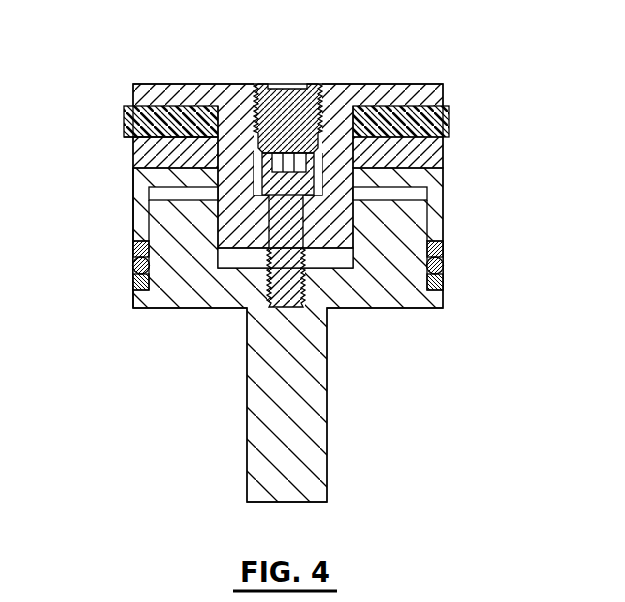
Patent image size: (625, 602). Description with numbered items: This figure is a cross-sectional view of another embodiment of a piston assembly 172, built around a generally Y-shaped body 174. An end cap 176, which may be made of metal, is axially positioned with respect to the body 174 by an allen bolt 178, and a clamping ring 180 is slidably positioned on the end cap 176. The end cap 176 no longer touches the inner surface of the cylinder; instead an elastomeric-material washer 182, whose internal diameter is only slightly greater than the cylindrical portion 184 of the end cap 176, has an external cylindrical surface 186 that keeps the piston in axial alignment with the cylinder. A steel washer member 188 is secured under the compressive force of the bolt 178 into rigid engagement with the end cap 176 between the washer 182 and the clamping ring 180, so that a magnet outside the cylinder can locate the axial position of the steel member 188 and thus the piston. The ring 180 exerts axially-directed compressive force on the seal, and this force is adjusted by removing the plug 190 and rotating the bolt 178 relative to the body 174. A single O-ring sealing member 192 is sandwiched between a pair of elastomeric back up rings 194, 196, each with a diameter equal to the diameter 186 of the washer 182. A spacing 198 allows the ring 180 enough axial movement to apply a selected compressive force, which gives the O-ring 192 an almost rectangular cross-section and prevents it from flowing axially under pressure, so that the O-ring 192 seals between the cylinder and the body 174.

The piston assembly 172 is at (484, 262).
The body 174 is at (313, 389).
The end cap 176 is at (390, 92).
The allen bolt 178 is at (308, 228).
The clamping ring 180 is at (145, 200).
The elastomeric-material washer 182 is at (147, 124).
The cylindrical portion 184 is at (334, 150).
The external cylindrical surface 186 is at (143, 128).
The steel washer member 188 is at (145, 153).
The plug 190 is at (285, 96).
The O-ring sealing member 192 is at (134, 268).
The back up ring 194 is at (443, 257).
The back up ring 196 is at (443, 287).
The spacing 198 is at (178, 193).